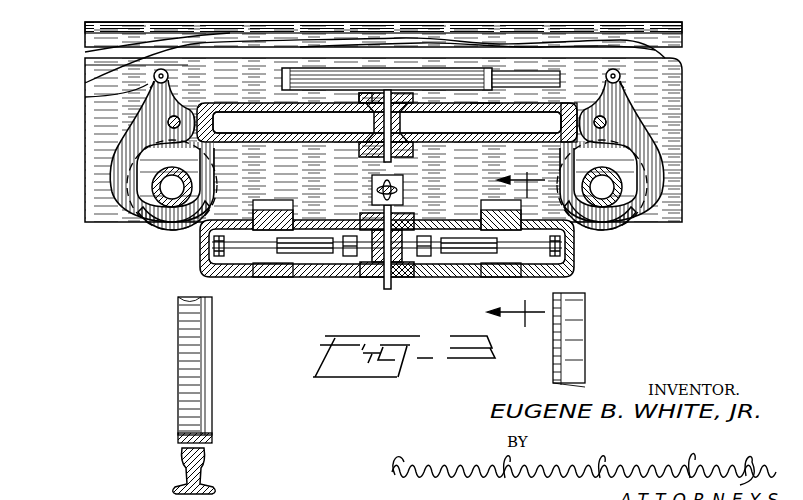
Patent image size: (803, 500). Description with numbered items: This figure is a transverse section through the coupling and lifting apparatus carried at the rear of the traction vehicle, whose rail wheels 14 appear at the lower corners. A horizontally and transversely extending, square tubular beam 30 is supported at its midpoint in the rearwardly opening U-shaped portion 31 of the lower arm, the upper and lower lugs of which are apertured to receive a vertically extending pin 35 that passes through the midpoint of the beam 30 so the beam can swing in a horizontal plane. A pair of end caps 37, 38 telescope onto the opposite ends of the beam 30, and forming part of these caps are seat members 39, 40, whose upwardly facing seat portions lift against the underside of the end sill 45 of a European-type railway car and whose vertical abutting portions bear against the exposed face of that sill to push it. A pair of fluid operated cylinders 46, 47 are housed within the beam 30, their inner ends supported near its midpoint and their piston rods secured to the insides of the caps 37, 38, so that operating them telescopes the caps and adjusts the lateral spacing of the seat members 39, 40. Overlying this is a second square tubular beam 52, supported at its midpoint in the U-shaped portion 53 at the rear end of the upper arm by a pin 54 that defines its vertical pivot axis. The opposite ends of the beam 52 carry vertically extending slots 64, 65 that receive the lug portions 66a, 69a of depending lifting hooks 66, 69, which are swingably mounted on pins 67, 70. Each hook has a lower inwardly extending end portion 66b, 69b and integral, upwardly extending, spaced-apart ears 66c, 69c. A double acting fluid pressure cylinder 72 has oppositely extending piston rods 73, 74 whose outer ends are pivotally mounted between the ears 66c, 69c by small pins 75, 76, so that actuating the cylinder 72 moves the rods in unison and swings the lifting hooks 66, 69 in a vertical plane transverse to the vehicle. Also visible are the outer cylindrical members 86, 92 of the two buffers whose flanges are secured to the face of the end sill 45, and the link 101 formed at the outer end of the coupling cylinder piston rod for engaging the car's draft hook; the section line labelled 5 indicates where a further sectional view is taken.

The rail wheels 14 is at (180, 372).
The tubular beam 30 is at (338, 268).
The U-shaped portion 31 is at (380, 280).
The pin 35 is at (392, 290).
The end cap 37 is at (200, 268).
The end cap 38 is at (567, 272).
The seat member 39 is at (285, 200).
The seat member 40 is at (480, 215).
The end sill 45 is at (650, 222).
The fluid operated cylinder 46 is at (320, 256).
The fluid operated cylinder 47 is at (450, 256).
The tubular beam 52 is at (485, 107).
The U-shaped portion 53 is at (358, 98).
The pin 54 is at (382, 126).
The slot 64 is at (187, 103).
The slot 65 is at (586, 110).
The lifting hook 66 is at (115, 155).
The lug portion 66a is at (213, 135).
The lower inwardly extending end portion 66b is at (150, 222).
The ears 66c is at (150, 92).
The pin 67 is at (168, 122).
The lifting hook 69 is at (650, 150).
The lug portion 69a is at (586, 142).
The lower inwardly extending end portion 69b is at (608, 222).
The ears 69c is at (618, 82).
The pin 70 is at (606, 122).
The fluid pressure operated cylinder 72 is at (455, 55).
The piston rod 73 is at (254, 78).
The piston rod 74 is at (530, 78).
The small pin 75 is at (152, 76).
The small pin 76 is at (615, 77).
The outer cylindrical member 86 is at (156, 178).
The outer cylindrical member 92 is at (622, 181).
The link 101 is at (372, 183).
The section line 5- 5 is at (504, 247).